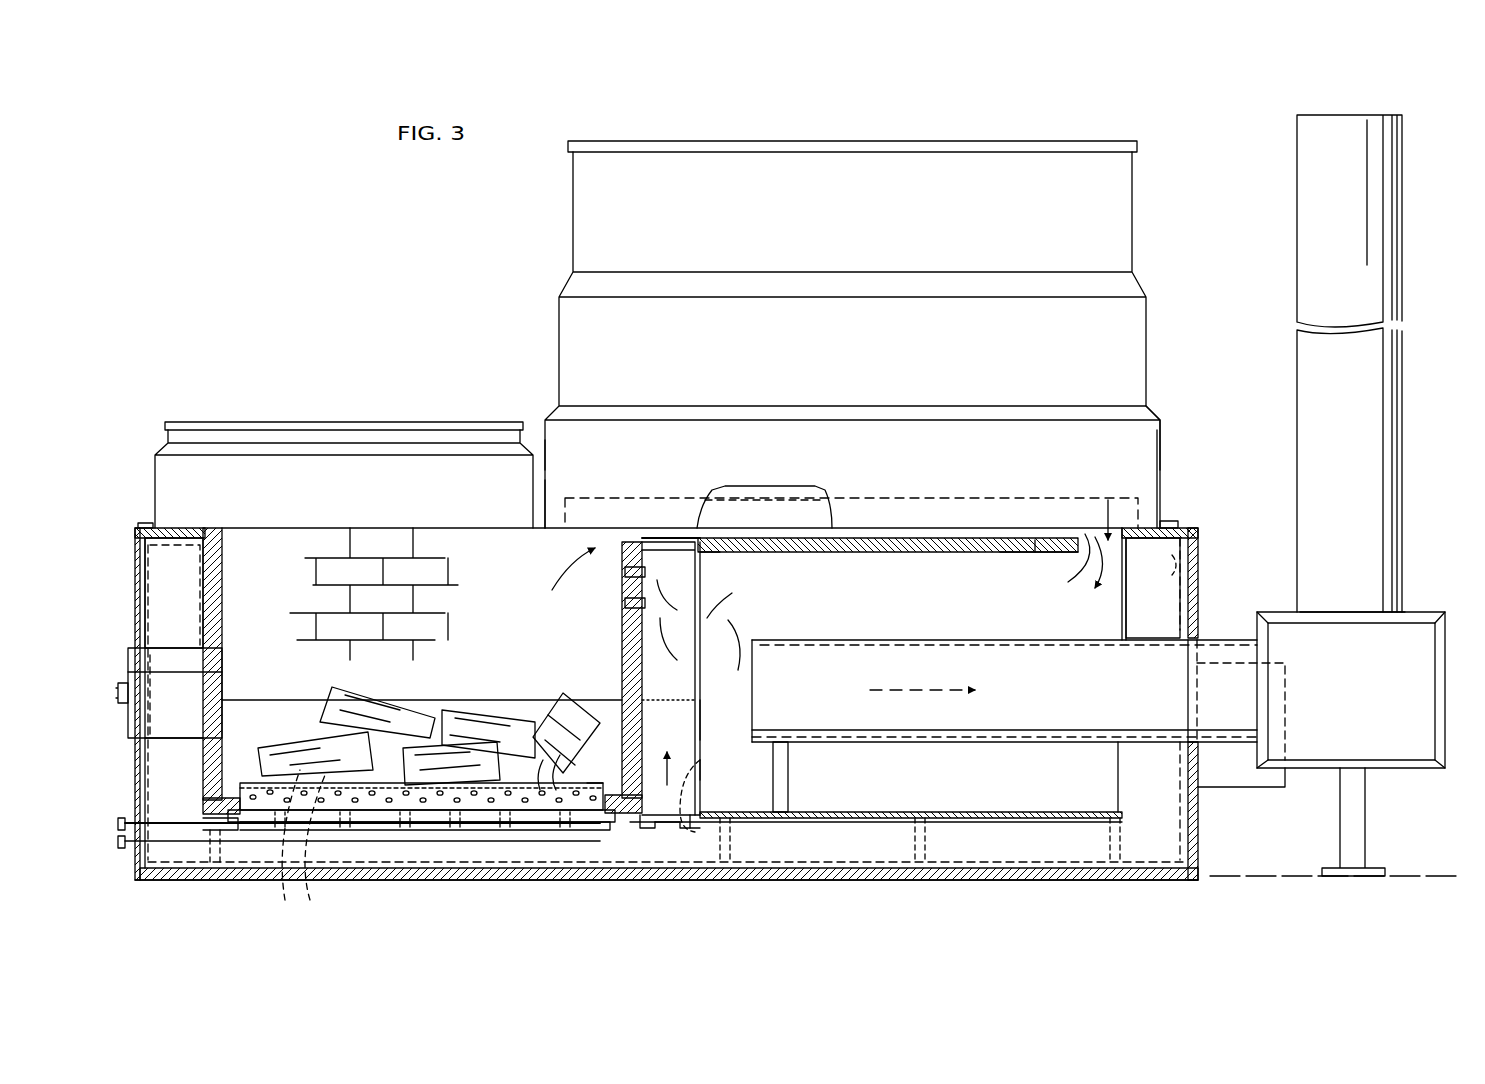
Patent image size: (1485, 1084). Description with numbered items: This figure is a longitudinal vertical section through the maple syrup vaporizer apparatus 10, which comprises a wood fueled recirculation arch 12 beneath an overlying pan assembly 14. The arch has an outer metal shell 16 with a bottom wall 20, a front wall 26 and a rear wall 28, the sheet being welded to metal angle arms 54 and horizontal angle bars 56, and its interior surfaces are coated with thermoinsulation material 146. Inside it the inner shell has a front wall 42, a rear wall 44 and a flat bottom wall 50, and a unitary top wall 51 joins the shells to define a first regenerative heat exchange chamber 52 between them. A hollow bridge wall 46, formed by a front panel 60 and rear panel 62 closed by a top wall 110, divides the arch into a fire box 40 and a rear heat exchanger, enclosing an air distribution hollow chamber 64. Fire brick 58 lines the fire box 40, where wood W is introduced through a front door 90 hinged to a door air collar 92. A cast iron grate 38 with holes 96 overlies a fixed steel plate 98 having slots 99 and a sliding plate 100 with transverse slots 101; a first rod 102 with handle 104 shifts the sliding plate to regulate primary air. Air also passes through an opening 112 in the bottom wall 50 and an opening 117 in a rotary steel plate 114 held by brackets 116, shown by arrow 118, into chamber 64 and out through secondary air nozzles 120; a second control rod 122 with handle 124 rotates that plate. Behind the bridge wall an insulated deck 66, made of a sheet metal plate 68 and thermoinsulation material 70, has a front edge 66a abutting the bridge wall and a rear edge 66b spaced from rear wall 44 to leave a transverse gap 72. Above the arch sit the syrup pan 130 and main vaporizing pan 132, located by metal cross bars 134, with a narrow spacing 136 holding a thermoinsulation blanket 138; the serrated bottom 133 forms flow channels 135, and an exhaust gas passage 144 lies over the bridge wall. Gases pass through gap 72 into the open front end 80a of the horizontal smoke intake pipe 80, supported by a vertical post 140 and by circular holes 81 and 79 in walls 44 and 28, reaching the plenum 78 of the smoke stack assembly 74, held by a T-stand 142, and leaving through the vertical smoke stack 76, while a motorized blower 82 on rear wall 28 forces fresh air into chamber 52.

The maple syrup vaporizer apparatus 10 is at (1228, 464).
The wood fueled recirculation arch 12 is at (135, 632).
The pan assembly 14 is at (413, 333).
The outer metal shell 16 is at (1205, 555).
The bottom wall 20 is at (866, 872).
The front wall 26 is at (135, 594).
The rear wall 28 is at (1198, 616).
The cast iron grate 38 is at (590, 782).
The fire box 40 is at (422, 666).
The inner shell front wall 42 is at (203, 598).
The inner shell rear wall 44 is at (1118, 610).
The bridge wall 46 is at (708, 618).
The bottom wall 50 is at (760, 814).
The top wall 51 is at (190, 528).
The first regenerative heat exchange chamber 52 is at (990, 842).
The metal angle arms 54 is at (545, 868).
The horizontal angle bars 56 is at (470, 862).
The fire brick 58 is at (400, 546).
The front panel 60 is at (645, 702).
The rear panel 62 is at (700, 742).
The air distribution hollow chamber 64 is at (671, 678).
The insulated deck 66 is at (960, 536).
The front edge 66a is at (718, 552).
The rear edge 66b is at (1072, 584).
The rectangular sheet metal plate 68 is at (1003, 553).
The thermoinsulation material 70 is at (1036, 538).
The transverse gap 72 is at (1108, 500).
The smoke stack assembly 74 is at (1420, 602).
The vertical smoke stack 76 is at (1405, 497).
The plenum 78 is at (1321, 690).
The circular hole 79 is at (1190, 642).
The horizontal smoke intake pipe 80 is at (1004, 691).
The front end 80a is at (752, 650).
The circular hole 81 is at (1122, 642).
The motorized blower 82 is at (1258, 790).
The front door 90 is at (150, 698).
The door air collar 92 is at (176, 720).
The holes 96 is at (554, 795).
The steel plate 98 is at (425, 815).
The slots 99 is at (290, 800).
The sliding plate 100 is at (370, 832).
The transverse slots 101 is at (299, 840).
The first rod 102 is at (186, 830).
The handle 104 is at (127, 818).
The top wall 110 is at (655, 540).
The opening 112 is at (652, 818).
The rotary steel plate 114 is at (660, 828).
The brackets or slides 116 is at (696, 830).
The opening 117 is at (700, 780).
The fresh air arrow 118 is at (700, 772).
The secondary air nozzles 120 is at (622, 604).
The second control rod 122 is at (195, 848).
The handle 124 is at (128, 860).
The syrup pan 130 is at (350, 420).
The main vaporizing pan 132 is at (1160, 456).
The bottom 133 is at (782, 486).
The metal cross bars 134 is at (143, 522).
The flow channels 135 is at (765, 508).
The narrow spacing 136 is at (540, 474).
The thermoinsulation blanket 138 is at (545, 503).
The vertical post 140 is at (790, 796).
The T-stand 142 is at (1340, 822).
The exhaust gas passage 144 is at (875, 533).
The thermoinsulation material 146 is at (775, 862).
The wood W is at (380, 702).